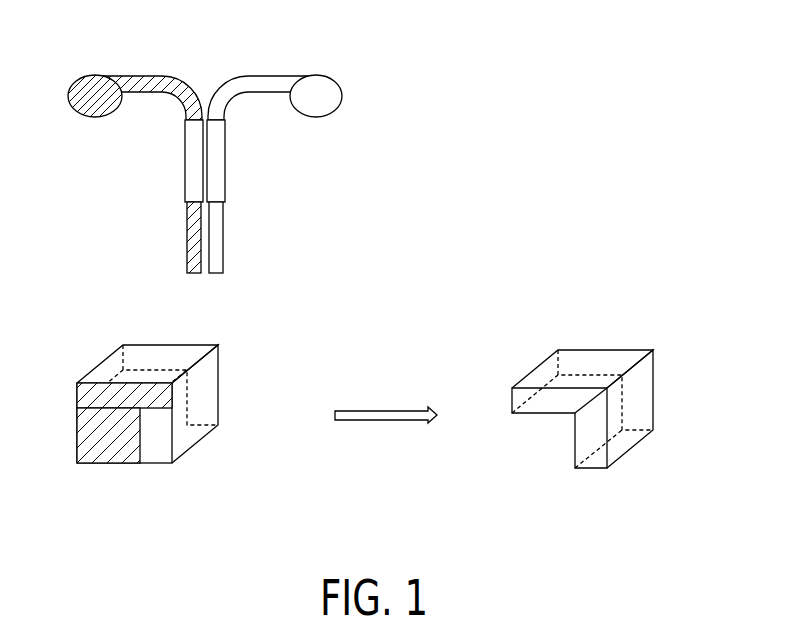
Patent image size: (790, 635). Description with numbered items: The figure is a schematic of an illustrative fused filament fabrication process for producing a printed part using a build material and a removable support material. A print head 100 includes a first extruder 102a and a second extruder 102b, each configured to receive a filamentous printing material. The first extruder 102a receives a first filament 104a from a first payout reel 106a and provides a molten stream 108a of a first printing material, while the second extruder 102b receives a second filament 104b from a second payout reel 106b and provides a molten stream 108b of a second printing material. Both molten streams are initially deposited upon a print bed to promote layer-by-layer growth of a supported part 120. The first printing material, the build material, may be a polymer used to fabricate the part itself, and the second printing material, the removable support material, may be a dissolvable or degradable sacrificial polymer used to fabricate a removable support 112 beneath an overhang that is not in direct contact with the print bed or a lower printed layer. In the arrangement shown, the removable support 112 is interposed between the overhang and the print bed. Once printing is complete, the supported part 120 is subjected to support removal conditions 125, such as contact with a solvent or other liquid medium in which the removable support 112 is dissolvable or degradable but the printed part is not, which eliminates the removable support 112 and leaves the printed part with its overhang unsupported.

The print head 100 is at (194, 143).
The first extruder 102a is at (220, 180).
The second extruder 102b is at (190, 180).
The first filament 104a is at (250, 82).
The second filament 104b is at (155, 85).
The first payout reel 106a is at (322, 82).
The second payout reel 106b is at (92, 85).
The molten stream of first printing material 108a is at (220, 235).
The molten stream of second printing material 108b is at (190, 235).
The removable support 112 is at (118, 467).
The supported part 120 is at (177, 420).
The support removal conditions 125 is at (383, 410).